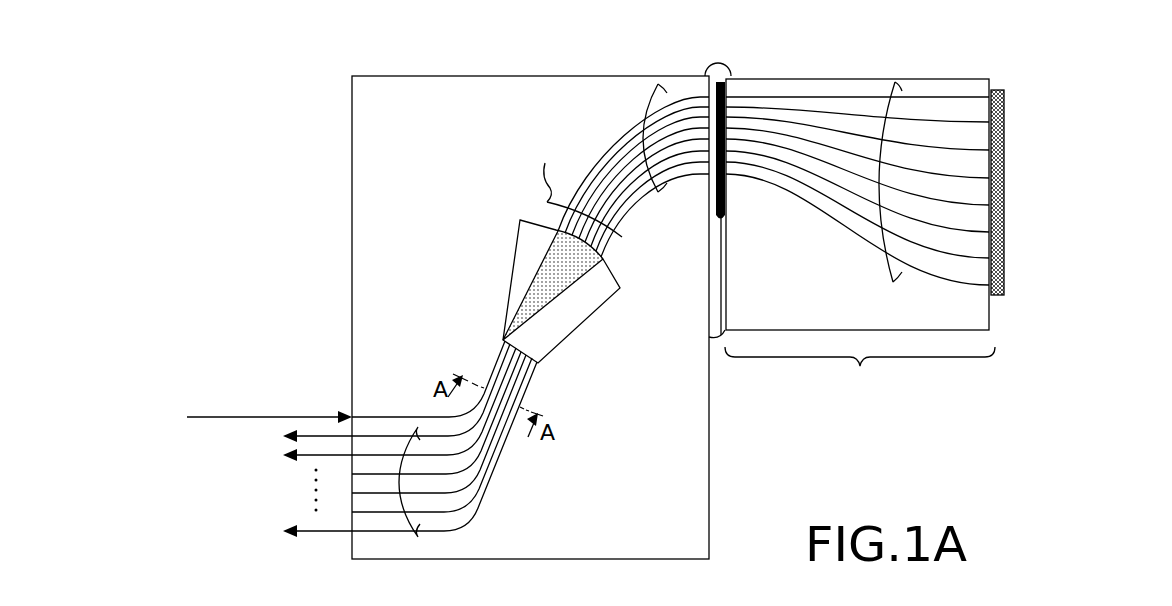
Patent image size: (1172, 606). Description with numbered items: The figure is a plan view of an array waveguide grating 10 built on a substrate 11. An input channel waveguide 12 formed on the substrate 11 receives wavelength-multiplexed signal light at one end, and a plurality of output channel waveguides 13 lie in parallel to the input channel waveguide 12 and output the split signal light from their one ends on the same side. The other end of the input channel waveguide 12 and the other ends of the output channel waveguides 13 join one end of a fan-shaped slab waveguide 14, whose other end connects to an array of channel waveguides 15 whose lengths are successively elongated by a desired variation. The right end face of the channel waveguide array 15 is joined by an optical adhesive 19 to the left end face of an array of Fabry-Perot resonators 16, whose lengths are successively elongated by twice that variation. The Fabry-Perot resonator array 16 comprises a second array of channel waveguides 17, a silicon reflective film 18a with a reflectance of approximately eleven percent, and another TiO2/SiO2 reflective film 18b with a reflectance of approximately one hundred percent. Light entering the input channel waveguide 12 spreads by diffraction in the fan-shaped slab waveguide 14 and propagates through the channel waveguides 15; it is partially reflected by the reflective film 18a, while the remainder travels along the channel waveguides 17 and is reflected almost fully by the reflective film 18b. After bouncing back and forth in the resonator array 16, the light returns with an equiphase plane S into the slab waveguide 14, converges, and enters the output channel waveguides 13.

The array waveguide grating 10 is at (1035, 106).
The substrate 11 is at (352, 183).
The input channel waveguide 12 is at (380, 416).
The output channel waveguides 13 is at (410, 535).
The fan-shaped slab waveguide 14 is at (516, 244).
The array of channel waveguides 15 is at (648, 97).
The array of Fabry-Perot resonators 16 is at (860, 374).
The second array of channel waveguides 17 is at (885, 88).
The reflective film 18a is at (722, 222).
The reflective film 18b is at (1040, 230).
The optical adhesive 19 is at (742, 40).